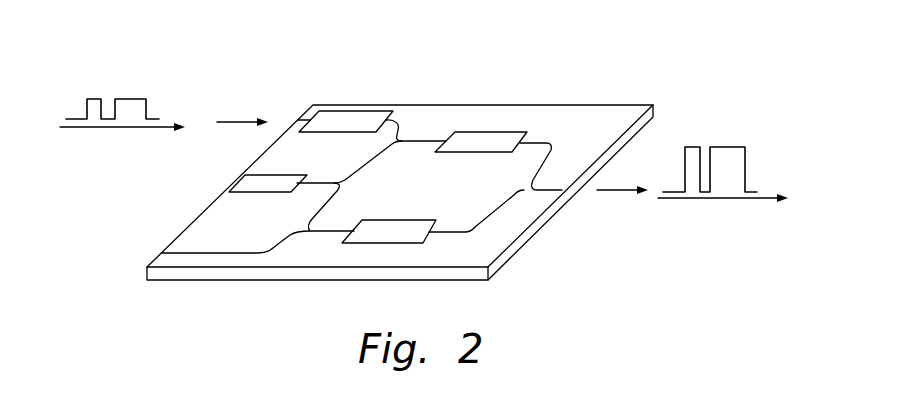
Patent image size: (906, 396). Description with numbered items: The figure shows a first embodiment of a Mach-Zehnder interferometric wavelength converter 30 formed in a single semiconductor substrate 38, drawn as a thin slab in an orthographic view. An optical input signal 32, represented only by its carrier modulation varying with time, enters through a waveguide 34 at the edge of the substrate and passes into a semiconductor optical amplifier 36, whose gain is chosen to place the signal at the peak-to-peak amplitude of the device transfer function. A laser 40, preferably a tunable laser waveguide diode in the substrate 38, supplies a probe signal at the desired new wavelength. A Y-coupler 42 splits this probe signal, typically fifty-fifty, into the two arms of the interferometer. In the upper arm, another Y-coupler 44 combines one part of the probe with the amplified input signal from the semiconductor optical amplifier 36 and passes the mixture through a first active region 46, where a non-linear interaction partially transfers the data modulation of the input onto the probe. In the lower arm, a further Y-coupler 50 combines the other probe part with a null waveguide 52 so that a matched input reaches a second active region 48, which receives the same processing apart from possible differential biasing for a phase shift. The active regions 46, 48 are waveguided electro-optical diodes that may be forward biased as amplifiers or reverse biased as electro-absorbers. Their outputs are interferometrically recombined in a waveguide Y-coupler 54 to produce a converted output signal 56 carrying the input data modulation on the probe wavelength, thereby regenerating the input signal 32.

The MZ interferometric wavelength converter 30 is at (433, 175).
The optical input signal 32 is at (93, 62).
The waveguide 34 is at (303, 118).
The semiconductor optical amplifier 36 is at (347, 110).
The semiconductor substrate 38 is at (513, 250).
The laser 40 is at (243, 179).
The Y-coupler 42 is at (320, 182).
The Y-coupler 44 is at (403, 140).
The first active region 46 is at (484, 153).
The second active region 48 is at (383, 220).
The Y-coupler 50 is at (313, 233).
The null waveguide 52 is at (228, 253).
The waveguide Y-coupler 54 is at (528, 190).
The converted output signal 56 is at (741, 98).